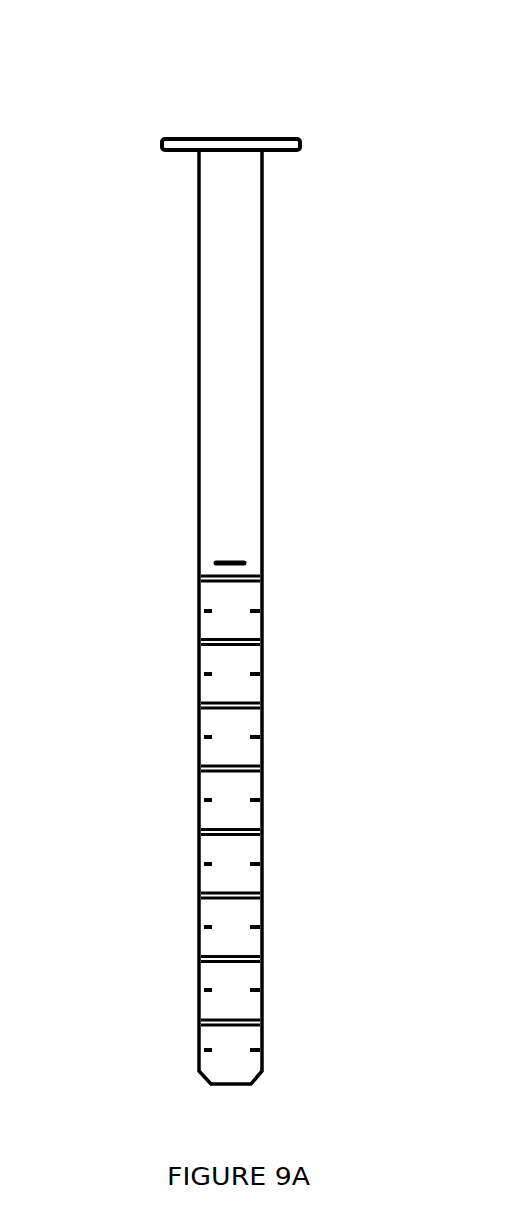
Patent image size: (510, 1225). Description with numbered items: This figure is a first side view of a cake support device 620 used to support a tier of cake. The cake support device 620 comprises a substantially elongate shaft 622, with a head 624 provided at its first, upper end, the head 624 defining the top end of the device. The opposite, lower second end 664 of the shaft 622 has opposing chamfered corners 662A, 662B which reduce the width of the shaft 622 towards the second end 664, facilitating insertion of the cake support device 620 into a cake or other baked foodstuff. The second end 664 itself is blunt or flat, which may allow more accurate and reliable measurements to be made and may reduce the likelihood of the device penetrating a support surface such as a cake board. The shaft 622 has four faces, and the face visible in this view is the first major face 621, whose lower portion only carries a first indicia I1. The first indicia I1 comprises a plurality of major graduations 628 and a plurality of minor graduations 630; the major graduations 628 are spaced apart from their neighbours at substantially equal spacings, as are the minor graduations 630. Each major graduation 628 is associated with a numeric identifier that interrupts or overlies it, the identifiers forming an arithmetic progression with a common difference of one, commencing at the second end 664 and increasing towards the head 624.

The cake support device 620 is at (232, 558).
The first major face 621 is at (210, 178).
The shaft 622 is at (263, 440).
The head 624 is at (283, 138).
The major graduations 628 is at (265, 682).
The minor graduations 630 is at (264, 727).
The chamfered corner 662A is at (203, 1082).
The chamfered corner 662B is at (262, 1081).
The second end 664 is at (232, 1086).
The first indicia I1 is at (214, 609).